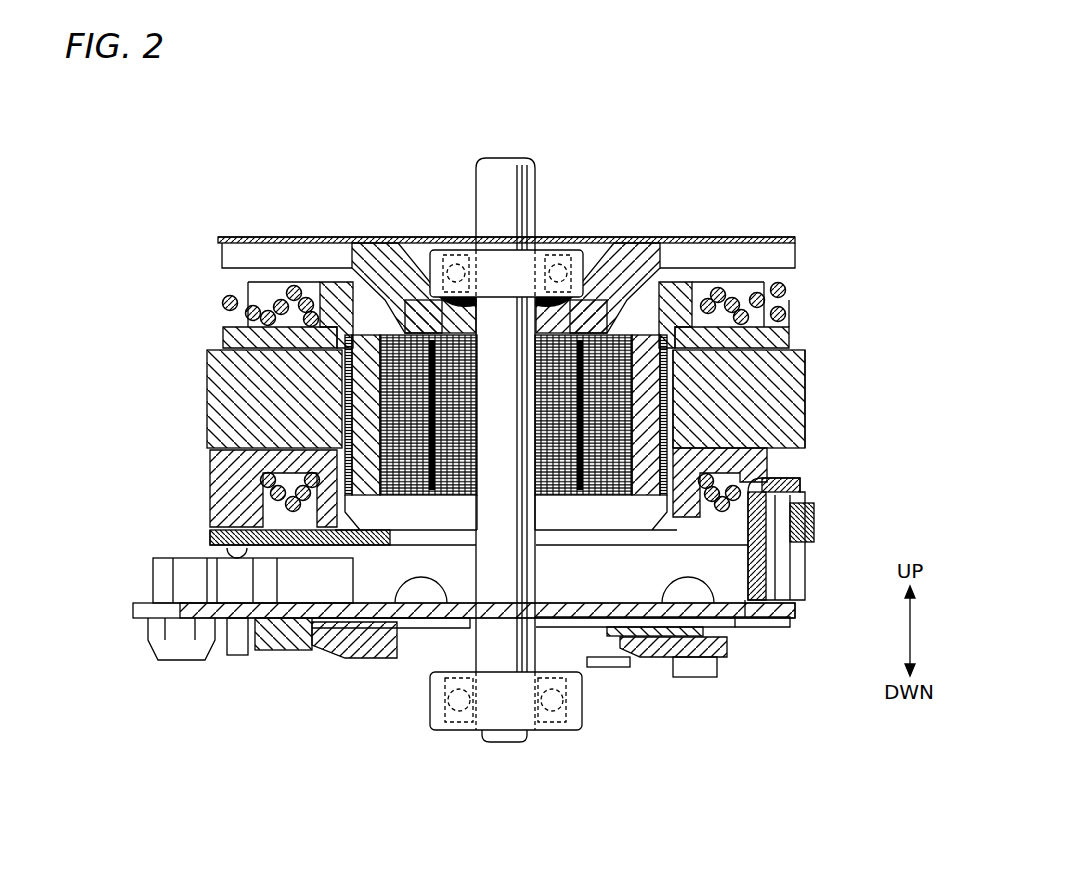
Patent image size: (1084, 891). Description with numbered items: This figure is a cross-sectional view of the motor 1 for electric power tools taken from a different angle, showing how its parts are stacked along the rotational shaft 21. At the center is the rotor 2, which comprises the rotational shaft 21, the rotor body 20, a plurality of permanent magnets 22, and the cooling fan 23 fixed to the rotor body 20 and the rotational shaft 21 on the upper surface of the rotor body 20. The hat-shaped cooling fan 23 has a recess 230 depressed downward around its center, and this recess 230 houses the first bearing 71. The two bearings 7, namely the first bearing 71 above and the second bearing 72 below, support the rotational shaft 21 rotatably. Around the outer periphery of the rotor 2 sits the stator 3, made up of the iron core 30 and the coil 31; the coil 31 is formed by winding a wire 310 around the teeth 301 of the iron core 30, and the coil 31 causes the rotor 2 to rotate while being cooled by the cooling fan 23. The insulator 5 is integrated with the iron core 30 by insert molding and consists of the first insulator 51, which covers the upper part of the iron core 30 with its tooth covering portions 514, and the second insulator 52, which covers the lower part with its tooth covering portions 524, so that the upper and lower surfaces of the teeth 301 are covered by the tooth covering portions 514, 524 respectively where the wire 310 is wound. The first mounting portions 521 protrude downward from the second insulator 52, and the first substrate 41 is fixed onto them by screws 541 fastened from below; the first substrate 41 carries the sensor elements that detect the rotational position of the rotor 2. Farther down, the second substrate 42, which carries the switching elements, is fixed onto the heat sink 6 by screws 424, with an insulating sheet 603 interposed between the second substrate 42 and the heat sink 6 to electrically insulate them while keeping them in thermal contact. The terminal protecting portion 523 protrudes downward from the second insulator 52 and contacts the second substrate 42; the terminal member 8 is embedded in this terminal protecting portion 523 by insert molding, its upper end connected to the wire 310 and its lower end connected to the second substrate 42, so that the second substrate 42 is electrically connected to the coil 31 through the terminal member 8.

The motor for electric power tools 1 is at (222, 130).
The rotor 2 is at (688, 190).
The rotor body 20 is at (600, 298).
The rotational shaft 21 is at (528, 214).
The permanent magnets 22 is at (642, 330).
The cooling fan 23 is at (678, 237).
The recess 230 is at (402, 257).
The stator 3 is at (157, 295).
The iron core 30 is at (212, 352).
The coil 31 is at (246, 314).
The wire 310 is at (718, 287).
The insulator 5 is at (853, 345).
The first insulator 51 is at (788, 342).
The tooth covering portions 514 is at (780, 333).
The second insulator 52 is at (758, 448).
The tooth covering portions 524 is at (752, 468).
The first mounting portions 521 is at (222, 490).
The circuit board 541 is at (215, 538).
The first substrate 41 is at (306, 546).
The screws 424 is at (413, 585).
The second substrate 42 is at (287, 612).
The insulating sheet 603 is at (350, 623).
The heat sink 6 is at (642, 658).
The terminal protecting portion 523 is at (733, 583).
The bearings 7 is at (506, 451).
The first bearing 71 is at (503, 265).
The second bearing 72 is at (503, 715).
The terminal member 8 is at (787, 493).
The teeth 301 is at (797, 437).